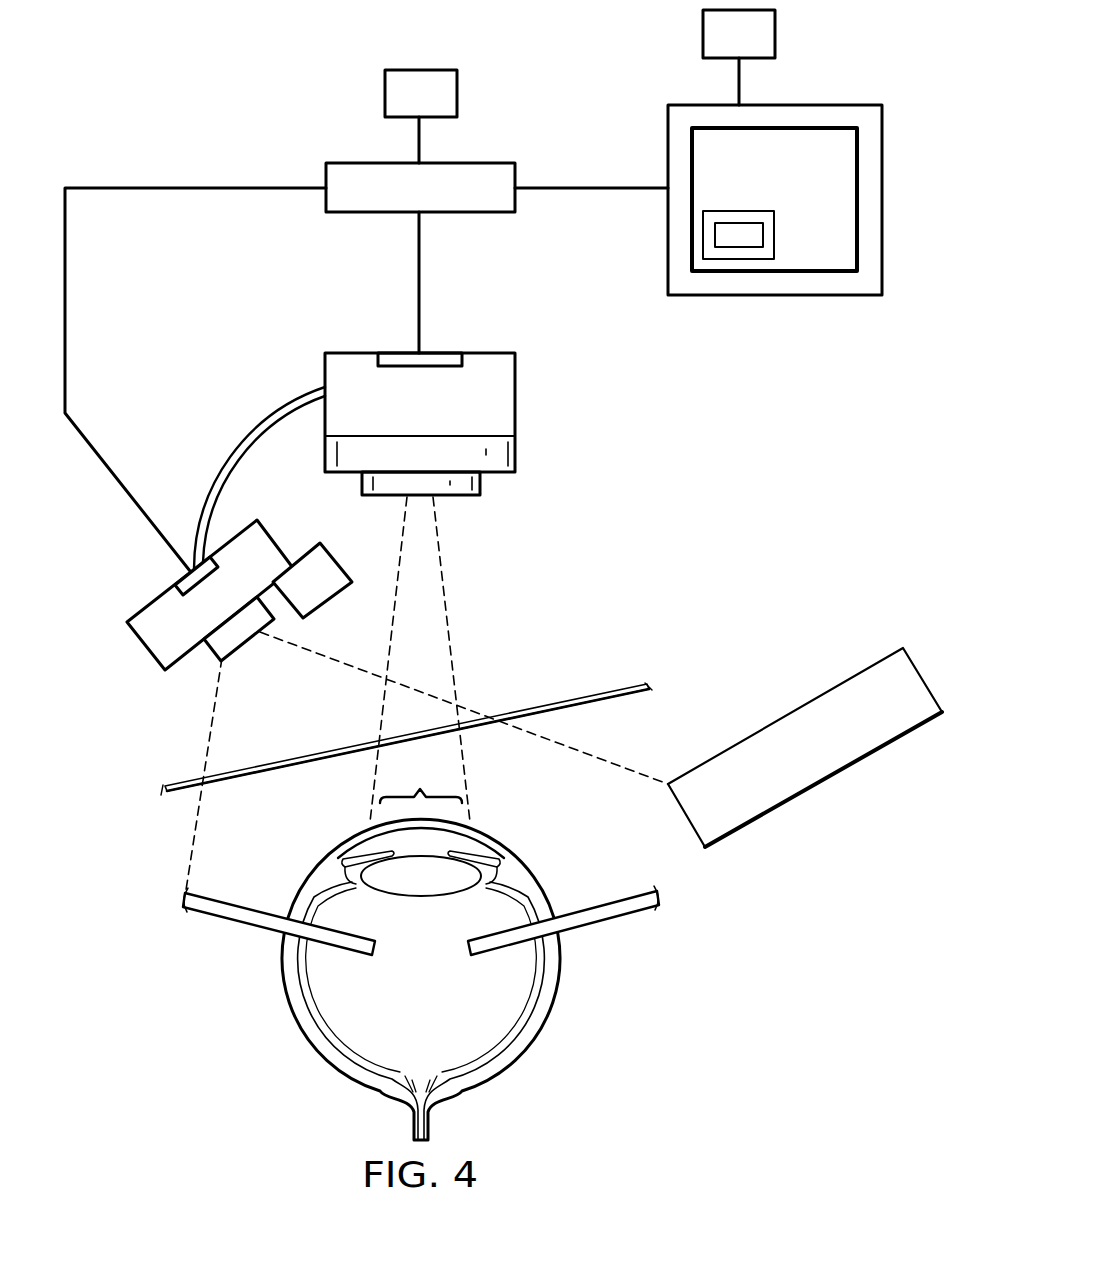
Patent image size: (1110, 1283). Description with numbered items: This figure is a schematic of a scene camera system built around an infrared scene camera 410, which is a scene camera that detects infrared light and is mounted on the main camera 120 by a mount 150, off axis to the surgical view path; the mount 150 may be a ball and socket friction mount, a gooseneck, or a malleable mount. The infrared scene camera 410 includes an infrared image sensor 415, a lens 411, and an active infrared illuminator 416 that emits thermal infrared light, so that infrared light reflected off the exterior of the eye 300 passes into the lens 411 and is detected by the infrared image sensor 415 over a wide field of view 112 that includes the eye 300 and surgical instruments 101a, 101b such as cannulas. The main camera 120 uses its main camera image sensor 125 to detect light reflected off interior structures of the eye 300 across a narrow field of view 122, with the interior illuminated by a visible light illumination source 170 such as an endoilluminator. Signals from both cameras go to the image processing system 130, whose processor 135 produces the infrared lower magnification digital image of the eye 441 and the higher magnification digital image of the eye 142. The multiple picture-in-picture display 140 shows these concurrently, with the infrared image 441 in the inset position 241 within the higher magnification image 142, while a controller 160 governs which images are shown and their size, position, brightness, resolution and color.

The controller 160 is at (703, 33).
The processor 135 is at (385, 92).
The image processing system 130 is at (481, 163).
The multiple picture-in-picture display 140 is at (840, 97).
The higher magnification digital image of the eye 142 is at (847, 157).
The inset position 241 is at (740, 211).
The infrared lower magnification digital image of the eye 441 is at (753, 233).
The main camera 120 is at (325, 378).
The main camera image sensor 125 is at (400, 355).
The mount 150 is at (219, 457).
The infrared scene camera 410 is at (143, 641).
The infrared image sensor 415 is at (185, 585).
The active infrared illuminator 416 is at (305, 551).
The lens 411 is at (250, 634).
The visible light illumination source 170 is at (822, 781).
The field of view 112 is at (268, 762).
The field of view 122 is at (421, 781).
The eye 300 is at (283, 963).
The surgical instrument 101a is at (238, 906).
The surgical instrument 101b is at (598, 906).